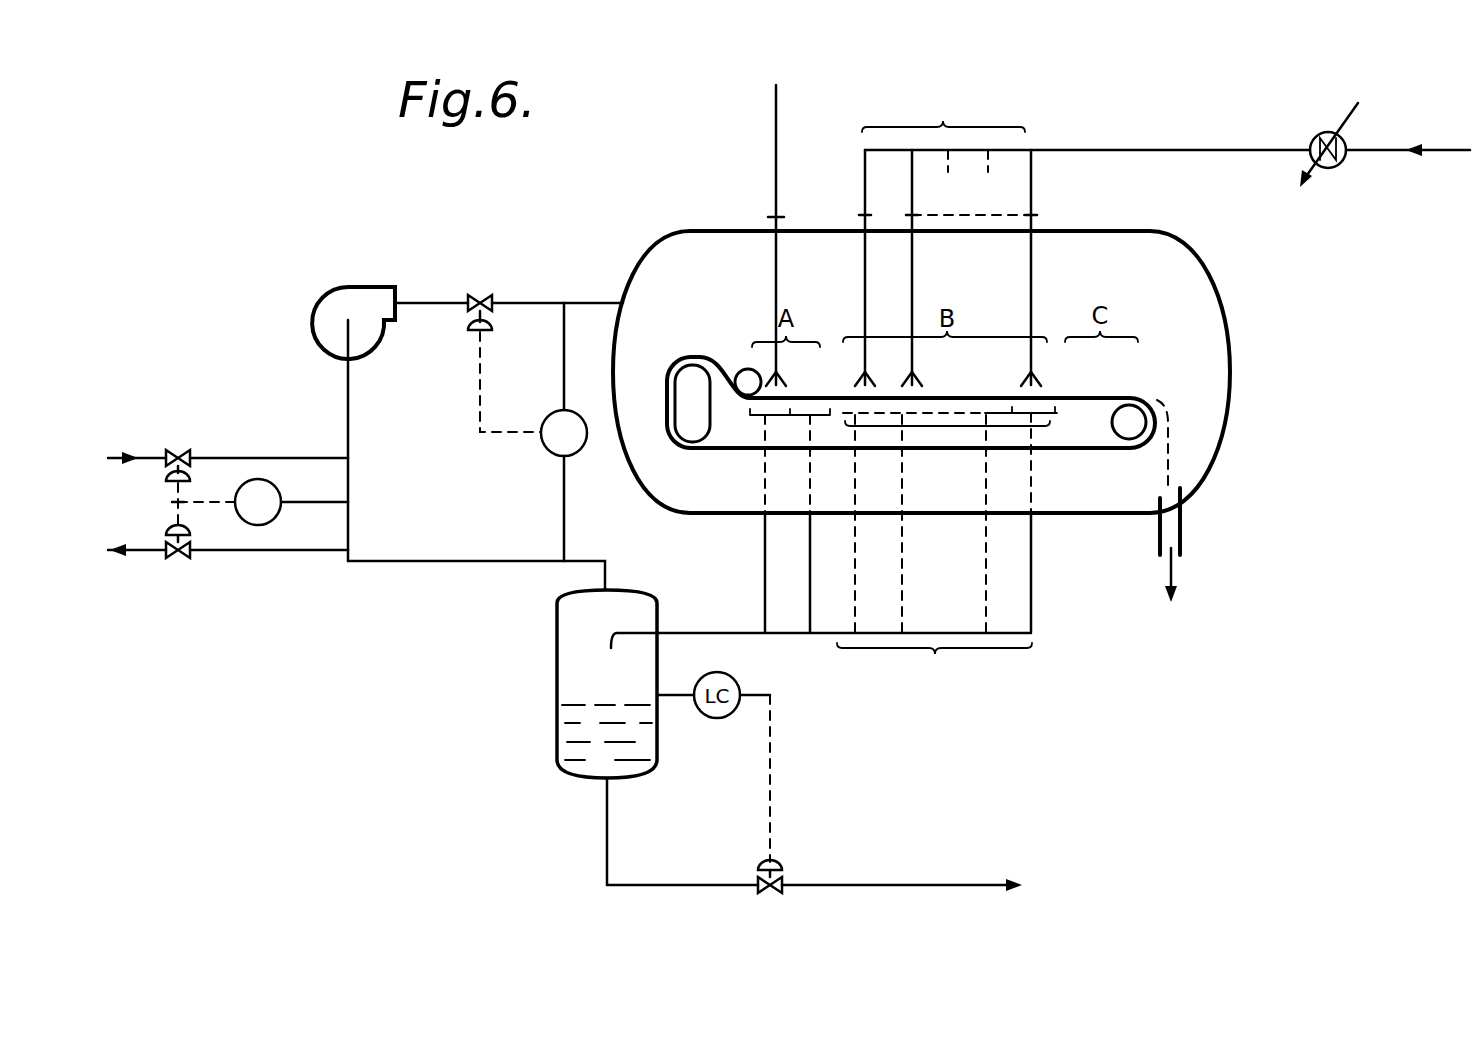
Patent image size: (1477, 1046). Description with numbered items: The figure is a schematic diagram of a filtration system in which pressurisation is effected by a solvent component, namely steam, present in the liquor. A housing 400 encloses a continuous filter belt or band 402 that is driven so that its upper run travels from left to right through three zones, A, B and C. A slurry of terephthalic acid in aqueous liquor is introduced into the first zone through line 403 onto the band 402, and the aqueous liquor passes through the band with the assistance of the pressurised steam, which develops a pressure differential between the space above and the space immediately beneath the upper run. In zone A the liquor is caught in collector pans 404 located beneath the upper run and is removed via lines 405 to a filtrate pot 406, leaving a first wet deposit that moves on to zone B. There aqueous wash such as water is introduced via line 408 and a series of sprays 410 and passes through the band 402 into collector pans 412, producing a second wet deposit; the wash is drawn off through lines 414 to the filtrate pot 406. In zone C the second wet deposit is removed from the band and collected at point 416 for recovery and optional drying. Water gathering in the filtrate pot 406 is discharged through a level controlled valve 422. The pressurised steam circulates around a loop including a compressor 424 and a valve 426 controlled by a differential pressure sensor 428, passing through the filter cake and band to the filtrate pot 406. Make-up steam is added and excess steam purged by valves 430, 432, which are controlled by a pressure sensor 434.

The housing 400 is at (1228, 310).
The filter belt or band 402 is at (1128, 395).
The line 403 is at (776, 155).
The collector pans 404 is at (804, 415).
The lines 405 is at (810, 575).
The filtrate pot 406 is at (557, 722).
The line 408 is at (1188, 148).
The sprays 410 is at (948, 236).
The collector pans 412 is at (942, 426).
The lines 414 is at (844, 556).
The collection point 416 is at (1182, 530).
The level controlled valve 422 is at (775, 893).
The compressor 424 is at (322, 295).
The valve 426 is at (482, 297).
The differential pressure sensor 428 is at (541, 446).
The valve 430 is at (178, 450).
The valve 432 is at (178, 558).
The pressure sensor 434 is at (258, 525).